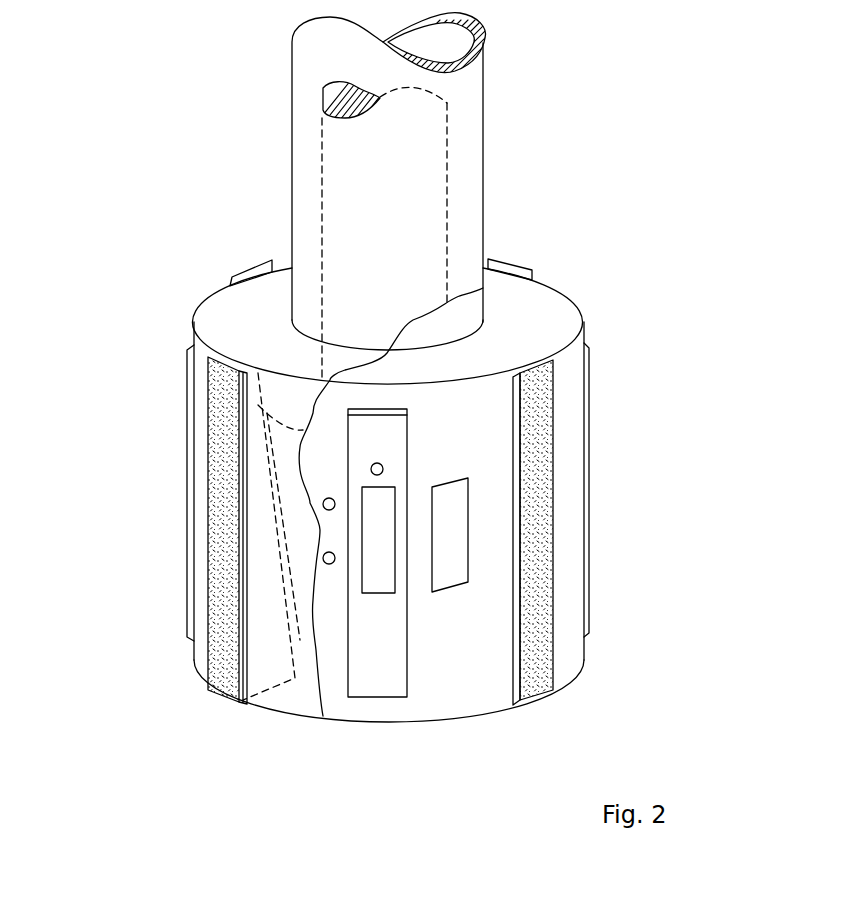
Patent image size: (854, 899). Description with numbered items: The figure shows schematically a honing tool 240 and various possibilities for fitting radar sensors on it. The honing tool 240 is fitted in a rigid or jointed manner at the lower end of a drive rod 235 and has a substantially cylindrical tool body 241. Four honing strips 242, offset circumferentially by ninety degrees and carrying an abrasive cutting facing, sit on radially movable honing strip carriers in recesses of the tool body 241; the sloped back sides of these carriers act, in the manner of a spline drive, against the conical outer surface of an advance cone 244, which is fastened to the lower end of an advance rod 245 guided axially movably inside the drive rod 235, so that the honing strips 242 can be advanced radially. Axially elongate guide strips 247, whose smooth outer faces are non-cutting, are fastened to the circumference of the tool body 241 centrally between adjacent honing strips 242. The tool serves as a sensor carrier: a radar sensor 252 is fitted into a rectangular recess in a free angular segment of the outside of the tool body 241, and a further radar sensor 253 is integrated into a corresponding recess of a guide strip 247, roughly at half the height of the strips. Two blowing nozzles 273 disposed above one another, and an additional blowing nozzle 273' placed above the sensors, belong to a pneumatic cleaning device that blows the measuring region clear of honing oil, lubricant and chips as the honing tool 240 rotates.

The honing tool 240 is at (140, 232).
The tool body 241 is at (550, 308).
The drive rod 235 is at (465, 97).
The advance rod 245 is at (433, 165).
The advance cone 244 is at (280, 380).
The honing strips 242 is at (250, 260).
The guide strips 247 is at (585, 547).
The radar sensor 253 is at (375, 577).
The radar sensor 252 is at (452, 567).
The blowing nozzles 273 is at (225, 523).
The blowing nozzle 273' is at (522, 460).